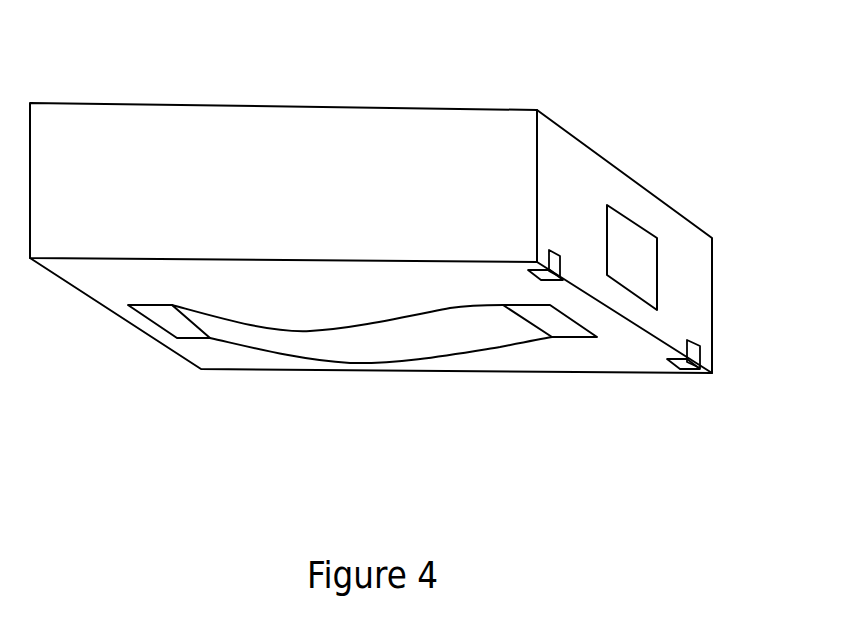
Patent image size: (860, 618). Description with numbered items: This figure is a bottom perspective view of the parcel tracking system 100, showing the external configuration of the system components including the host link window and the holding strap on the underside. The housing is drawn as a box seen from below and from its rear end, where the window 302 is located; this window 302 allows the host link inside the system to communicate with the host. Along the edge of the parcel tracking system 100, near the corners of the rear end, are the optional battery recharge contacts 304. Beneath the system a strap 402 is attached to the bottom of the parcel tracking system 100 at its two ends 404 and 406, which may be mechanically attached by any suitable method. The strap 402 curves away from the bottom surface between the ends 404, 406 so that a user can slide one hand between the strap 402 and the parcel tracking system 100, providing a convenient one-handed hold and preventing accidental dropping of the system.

The parcel tracking system 100 is at (310, 80).
The window 302 is at (625, 248).
The battery recharge contacts 304 is at (553, 253).
The strap 402 is at (282, 340).
The end 404 is at (163, 318).
The end 406 is at (565, 328).